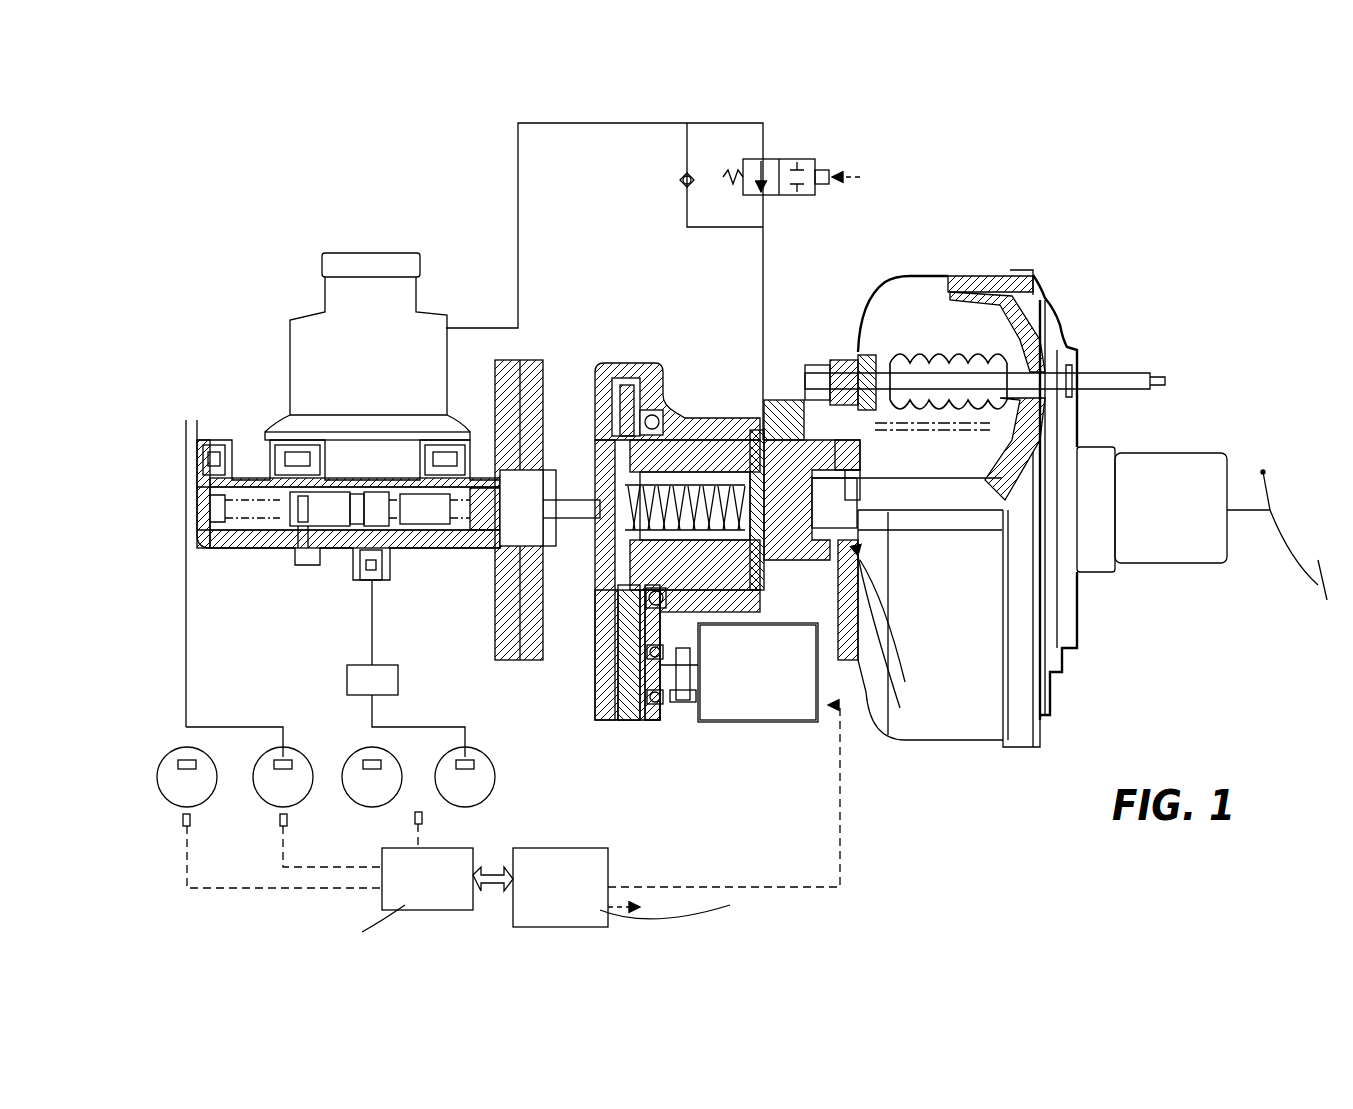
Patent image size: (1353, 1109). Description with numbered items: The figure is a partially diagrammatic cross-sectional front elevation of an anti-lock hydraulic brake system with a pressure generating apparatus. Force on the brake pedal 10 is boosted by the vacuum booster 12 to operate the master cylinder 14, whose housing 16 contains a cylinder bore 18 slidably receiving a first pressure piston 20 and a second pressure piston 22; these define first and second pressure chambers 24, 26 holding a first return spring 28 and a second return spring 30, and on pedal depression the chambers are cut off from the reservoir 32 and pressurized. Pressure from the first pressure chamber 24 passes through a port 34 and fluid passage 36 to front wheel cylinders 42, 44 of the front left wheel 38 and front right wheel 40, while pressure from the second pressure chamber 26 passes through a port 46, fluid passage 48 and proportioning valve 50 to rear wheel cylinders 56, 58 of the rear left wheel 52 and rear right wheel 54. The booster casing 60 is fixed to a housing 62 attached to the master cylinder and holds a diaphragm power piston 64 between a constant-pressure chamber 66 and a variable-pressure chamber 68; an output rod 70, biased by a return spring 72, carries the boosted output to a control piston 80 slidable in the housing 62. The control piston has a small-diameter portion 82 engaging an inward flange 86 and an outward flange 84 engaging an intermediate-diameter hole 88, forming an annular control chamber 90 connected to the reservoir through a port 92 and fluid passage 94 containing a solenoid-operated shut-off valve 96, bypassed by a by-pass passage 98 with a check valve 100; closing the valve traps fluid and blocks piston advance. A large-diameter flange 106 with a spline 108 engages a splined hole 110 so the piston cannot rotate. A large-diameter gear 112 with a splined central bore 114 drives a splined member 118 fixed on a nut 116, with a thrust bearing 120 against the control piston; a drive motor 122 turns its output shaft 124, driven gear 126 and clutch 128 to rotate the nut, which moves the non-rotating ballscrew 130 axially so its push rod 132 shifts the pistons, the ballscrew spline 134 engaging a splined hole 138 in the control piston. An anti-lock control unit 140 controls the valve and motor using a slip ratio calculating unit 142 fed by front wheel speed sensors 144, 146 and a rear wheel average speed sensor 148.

The brake pedal 10 is at (1278, 548).
The vacuum booster 12 is at (1040, 244).
The master cylinder 14 is at (252, 385).
The housing 16 is at (250, 545).
The cylinder bore 18 is at (258, 470).
The first pressure piston 20 is at (335, 520).
The second pressure piston 22 is at (498, 515).
The first pressure chamber 24 is at (275, 530).
The second pressure chamber 26 is at (437, 530).
The first return spring 28 is at (208, 548).
The second return spring 30 is at (425, 540).
The reservoir 32 is at (325, 292).
The port 34 is at (218, 445).
The fluid passage 36 is at (186, 672).
The front left wheel 38 is at (162, 785).
The front right wheel 40 is at (258, 785).
The front wheel cylinder 42 is at (176, 757).
The front wheel cylinder 44 is at (272, 757).
The port 46 is at (368, 578).
The fluid passage 48 is at (372, 640).
The proportioning valve 50 is at (398, 680).
The rear left wheel 52 is at (348, 785).
The rear right wheel 54 is at (488, 785).
The rear wheel cylinder 56 is at (362, 757).
The rear wheel cylinder 58 is at (455, 757).
The casing 60 is at (955, 300).
The housing 62 is at (528, 362).
The power piston 64 is at (1036, 320).
The constant-pressure chamber 66 is at (940, 278).
The variable-pressure chamber 68 is at (1077, 347).
The output rod 70 is at (865, 515).
The return spring 72 is at (995, 432).
The control piston 80 is at (888, 590).
The small-diameter portion 82 is at (800, 440).
The large-diameter portion 84 is at (870, 455).
The inward flange 86 is at (840, 660).
The intermediate-diameter hole 88 is at (865, 470).
The annular control chamber 90 is at (795, 350).
The port 92 is at (770, 440).
The fluid passage 94 is at (763, 293).
The solenoid-operated shut-off valve 96 is at (790, 195).
The by-pass passage 98 is at (687, 146).
The check valve 100 is at (681, 186).
The large-diameter flange 106 is at (778, 600).
The spline 108 is at (743, 430).
The splined hole 110 is at (694, 432).
The large-diameter gear 112 is at (615, 560).
The splined central bore 114 is at (615, 440).
The nut 116 is at (632, 620).
The splined member 118 is at (748, 598).
The thrust bearing 120 is at (722, 430).
The drive motor 122 is at (752, 708).
The output shaft 124 is at (668, 648).
The driven gear 126 is at (640, 700).
The clutch 128 is at (683, 702).
The ballscrew 130 is at (625, 600).
The push rod 132 is at (650, 640).
The spline 134 is at (899, 641).
The splined hole 138 is at (900, 631).
The anti-lock control unit 140 is at (583, 848).
The slip ratio calculating unit 142 is at (453, 848).
The front wheel speed sensor 144 is at (182, 822).
The front wheel speed sensor 146 is at (280, 822).
The rear wheel average speed sensor 148 is at (414, 820).